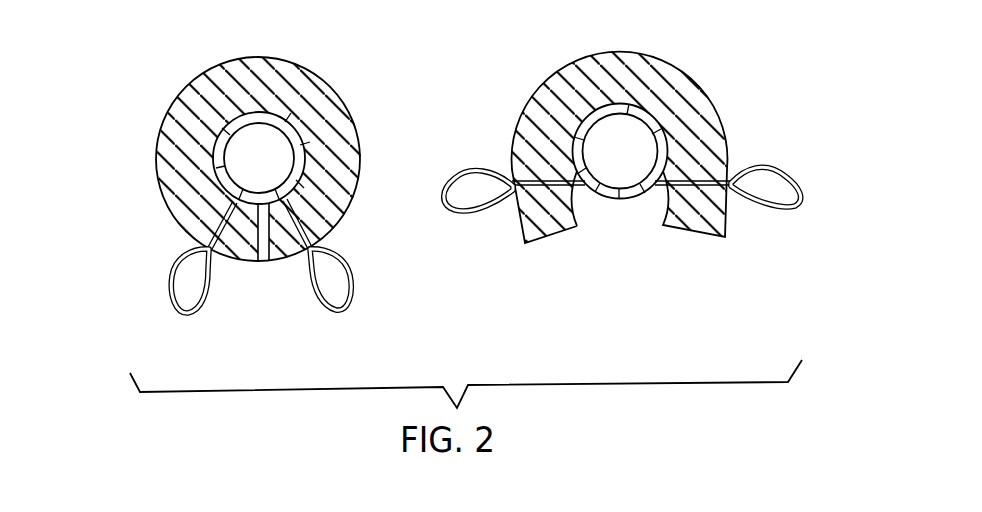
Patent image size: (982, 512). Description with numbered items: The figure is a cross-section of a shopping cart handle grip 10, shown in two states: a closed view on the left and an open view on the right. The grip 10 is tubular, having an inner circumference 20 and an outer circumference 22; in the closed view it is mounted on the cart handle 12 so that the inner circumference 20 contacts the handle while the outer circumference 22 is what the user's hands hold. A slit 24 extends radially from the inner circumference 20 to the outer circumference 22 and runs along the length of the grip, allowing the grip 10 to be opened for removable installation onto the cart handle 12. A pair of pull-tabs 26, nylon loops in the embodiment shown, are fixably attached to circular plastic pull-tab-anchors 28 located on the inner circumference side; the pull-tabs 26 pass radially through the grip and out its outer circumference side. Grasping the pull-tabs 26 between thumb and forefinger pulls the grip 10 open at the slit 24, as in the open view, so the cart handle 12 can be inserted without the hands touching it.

The handle grip 10 is at (122, 41).
The cart handle 12 is at (218, 148).
The inner circumference 20 is at (287, 118).
The outer circumference 22 is at (355, 120).
The slit 24 is at (269, 258).
The pull-tabs 26 is at (173, 298).
The pull-tab-anchors 28 is at (243, 199).